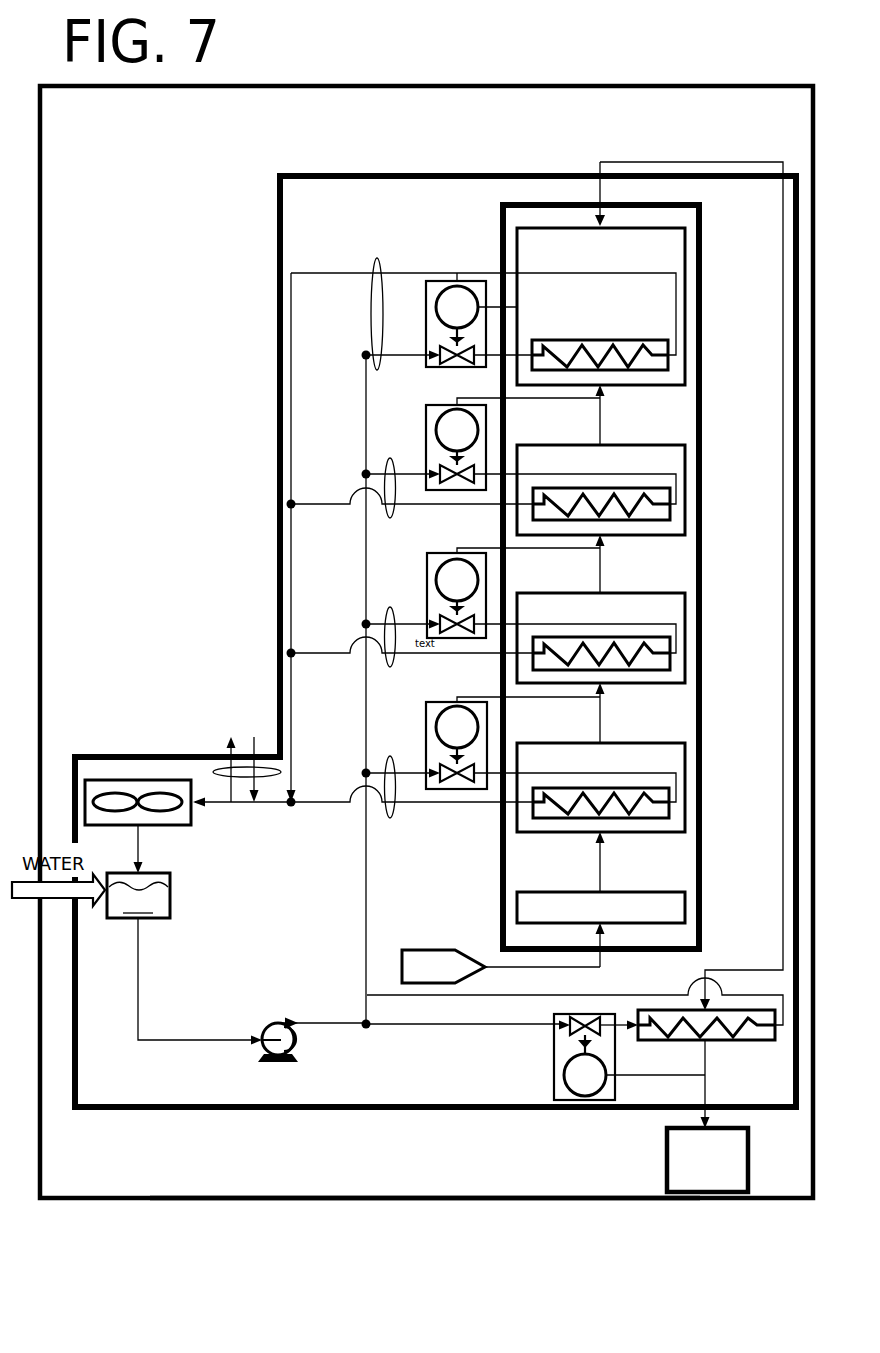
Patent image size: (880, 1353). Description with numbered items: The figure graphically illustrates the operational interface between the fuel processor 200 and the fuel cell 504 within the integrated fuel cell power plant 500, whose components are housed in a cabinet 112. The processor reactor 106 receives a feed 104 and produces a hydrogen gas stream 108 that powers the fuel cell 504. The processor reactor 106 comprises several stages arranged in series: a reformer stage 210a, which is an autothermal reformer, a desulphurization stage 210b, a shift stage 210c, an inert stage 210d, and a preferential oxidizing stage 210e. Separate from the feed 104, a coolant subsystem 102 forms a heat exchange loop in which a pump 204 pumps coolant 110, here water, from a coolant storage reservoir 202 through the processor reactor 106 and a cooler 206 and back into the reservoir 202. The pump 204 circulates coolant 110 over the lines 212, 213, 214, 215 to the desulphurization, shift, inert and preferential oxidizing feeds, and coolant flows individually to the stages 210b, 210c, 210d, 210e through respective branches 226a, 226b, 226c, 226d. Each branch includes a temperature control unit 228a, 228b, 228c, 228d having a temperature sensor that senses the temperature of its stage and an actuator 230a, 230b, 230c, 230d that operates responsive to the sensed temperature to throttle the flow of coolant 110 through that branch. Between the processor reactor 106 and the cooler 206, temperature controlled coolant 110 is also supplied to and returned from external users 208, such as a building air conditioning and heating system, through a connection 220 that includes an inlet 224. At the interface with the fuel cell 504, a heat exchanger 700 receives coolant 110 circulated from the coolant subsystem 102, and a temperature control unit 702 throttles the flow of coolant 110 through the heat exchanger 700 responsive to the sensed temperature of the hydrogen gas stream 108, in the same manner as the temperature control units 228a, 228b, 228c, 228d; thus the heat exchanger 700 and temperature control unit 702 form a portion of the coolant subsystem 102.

The coolant subsystem 102 is at (158, 1059).
The feed 104 is at (490, 962).
The processor reactor 106 is at (448, 226).
The hydrogen gas stream 108 is at (597, 161).
The coolant 110 is at (138, 898).
The cabinet 112 is at (223, 1196).
The fuel processor 200 is at (244, 391).
The coolant storage reservoir 202 is at (172, 910).
The pump 204 is at (263, 1025).
The cooler 206 is at (128, 778).
The external users 208 is at (158, 647).
The reformer stage 210a is at (687, 905).
The desulphurization stage 210b is at (687, 785).
The shift stage 210c is at (686, 638).
The inert stage 210d is at (686, 490).
The preferential oxidizing stage 210e is at (686, 303).
The line 212 is at (404, 770).
The line 213 is at (404, 621).
The line 214 is at (404, 471).
The line 215 is at (408, 353).
The connection 220 is at (278, 771).
The inlet 224 is at (258, 790).
The branch 226a is at (388, 818).
The branch 226b is at (388, 667).
The branch 226c is at (388, 518).
The branch 226d is at (375, 371).
The temperature control unit 228a is at (487, 745).
The temperature control unit 228b is at (487, 595).
The temperature control unit 228c is at (487, 445).
The temperature control unit 228d is at (487, 323).
The actuator 230a is at (455, 783).
The actuator 230b is at (455, 633).
The actuator 230c is at (455, 483).
The actuator 230d is at (457, 364).
The fuel cell power plant 500 is at (443, 138).
The fuel cell 504 is at (666, 1160).
The heat exchanger 700 is at (722, 1042).
The temperature control unit 702 is at (554, 1055).